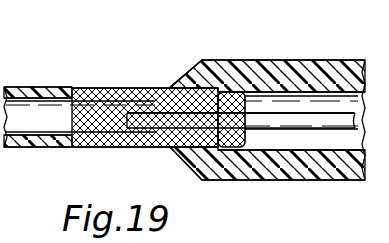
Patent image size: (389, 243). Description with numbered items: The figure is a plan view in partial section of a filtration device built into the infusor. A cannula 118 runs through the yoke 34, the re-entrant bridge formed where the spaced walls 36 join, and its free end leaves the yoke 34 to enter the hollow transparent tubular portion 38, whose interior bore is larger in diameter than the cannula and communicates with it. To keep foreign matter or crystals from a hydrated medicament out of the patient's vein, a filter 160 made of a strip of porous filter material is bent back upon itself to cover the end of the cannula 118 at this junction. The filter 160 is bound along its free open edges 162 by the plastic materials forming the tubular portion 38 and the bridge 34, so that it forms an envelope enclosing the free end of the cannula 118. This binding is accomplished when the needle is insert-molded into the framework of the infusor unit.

The yoke 34 is at (203, 72).
The spaced walls 36 is at (327, 65).
The tubular member 38 is at (40, 87).
The cannula 118 is at (290, 130).
The filter 160 is at (236, 98).
The free open edges 162 is at (96, 88).